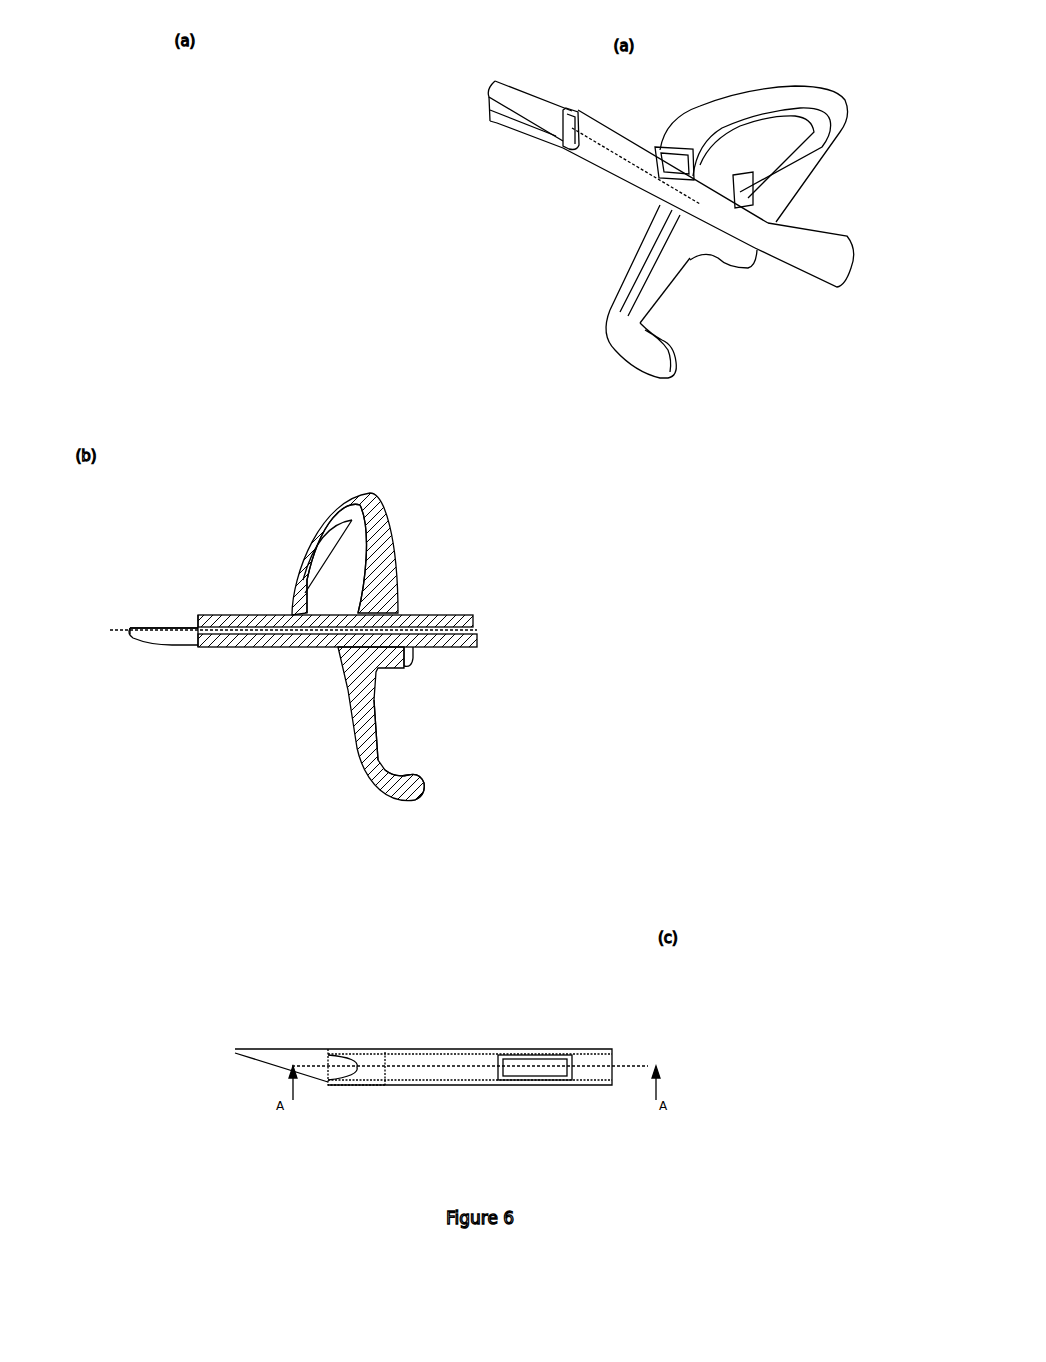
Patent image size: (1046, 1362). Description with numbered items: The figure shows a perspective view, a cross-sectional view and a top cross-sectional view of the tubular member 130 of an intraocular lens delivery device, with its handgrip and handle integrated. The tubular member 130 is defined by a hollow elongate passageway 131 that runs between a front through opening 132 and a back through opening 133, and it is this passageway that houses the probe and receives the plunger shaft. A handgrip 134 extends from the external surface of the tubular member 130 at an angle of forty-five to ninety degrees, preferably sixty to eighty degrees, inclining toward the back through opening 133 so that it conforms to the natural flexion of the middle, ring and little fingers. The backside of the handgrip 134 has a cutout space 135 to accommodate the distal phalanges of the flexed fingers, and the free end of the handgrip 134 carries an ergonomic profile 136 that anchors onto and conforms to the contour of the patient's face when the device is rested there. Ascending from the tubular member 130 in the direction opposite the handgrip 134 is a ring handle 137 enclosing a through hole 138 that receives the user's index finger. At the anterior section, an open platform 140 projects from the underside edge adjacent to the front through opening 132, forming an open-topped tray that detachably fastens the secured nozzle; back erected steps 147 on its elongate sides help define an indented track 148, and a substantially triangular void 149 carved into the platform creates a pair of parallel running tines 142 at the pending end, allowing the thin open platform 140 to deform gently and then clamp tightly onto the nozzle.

The tubular member 130 is at (620, 208).
The hollow elongate passageway 131 is at (257, 632).
The front through opening 132 is at (547, 147).
The back through opening 133 is at (473, 632).
The handgrip 134 is at (633, 275).
The cutout space 135 is at (670, 322).
The ergonomic profile 136 is at (643, 372).
The ring handle 137 is at (716, 122).
The through hole 138 is at (753, 170).
The open platform 140 is at (472, 122).
The parallel running tines 142 is at (493, 90).
The back erected steps 147 is at (197, 625).
The indented track 148 is at (145, 625).
The void 149 is at (347, 1063).